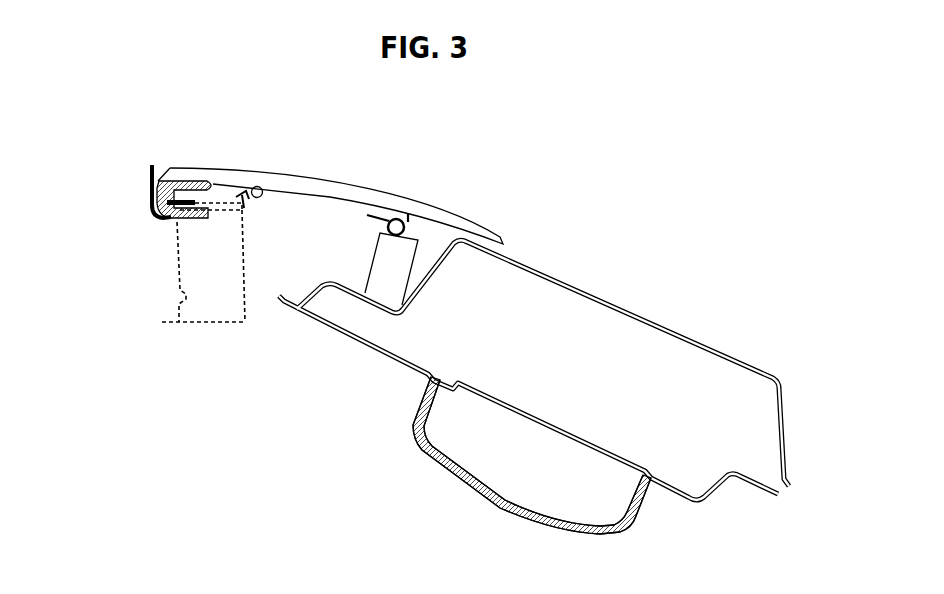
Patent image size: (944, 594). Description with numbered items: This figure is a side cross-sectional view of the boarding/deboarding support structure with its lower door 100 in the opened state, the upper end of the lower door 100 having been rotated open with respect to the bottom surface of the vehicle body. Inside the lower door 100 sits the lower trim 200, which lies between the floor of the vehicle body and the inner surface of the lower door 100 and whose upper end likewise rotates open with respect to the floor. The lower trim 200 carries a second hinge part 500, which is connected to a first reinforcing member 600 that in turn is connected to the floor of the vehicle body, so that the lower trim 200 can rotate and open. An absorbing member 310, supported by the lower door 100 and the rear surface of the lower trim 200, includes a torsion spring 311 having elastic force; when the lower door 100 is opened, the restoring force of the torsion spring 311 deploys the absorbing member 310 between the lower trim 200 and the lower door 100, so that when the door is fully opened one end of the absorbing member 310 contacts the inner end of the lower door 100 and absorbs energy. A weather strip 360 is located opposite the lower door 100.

The lower door 100 is at (727, 423).
The lower trim 200 is at (268, 168).
The absorbing member 310 is at (407, 257).
The torsion spring 311 is at (397, 214).
The weather strip 360 is at (250, 207).
The second hinge part 500 is at (151, 207).
The first reinforcing member 600 is at (200, 324).